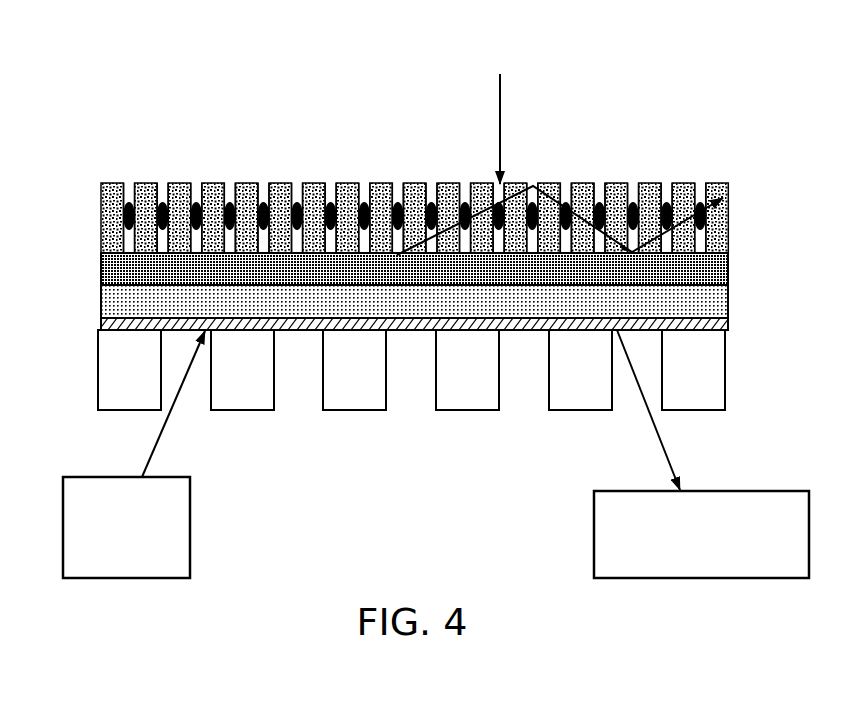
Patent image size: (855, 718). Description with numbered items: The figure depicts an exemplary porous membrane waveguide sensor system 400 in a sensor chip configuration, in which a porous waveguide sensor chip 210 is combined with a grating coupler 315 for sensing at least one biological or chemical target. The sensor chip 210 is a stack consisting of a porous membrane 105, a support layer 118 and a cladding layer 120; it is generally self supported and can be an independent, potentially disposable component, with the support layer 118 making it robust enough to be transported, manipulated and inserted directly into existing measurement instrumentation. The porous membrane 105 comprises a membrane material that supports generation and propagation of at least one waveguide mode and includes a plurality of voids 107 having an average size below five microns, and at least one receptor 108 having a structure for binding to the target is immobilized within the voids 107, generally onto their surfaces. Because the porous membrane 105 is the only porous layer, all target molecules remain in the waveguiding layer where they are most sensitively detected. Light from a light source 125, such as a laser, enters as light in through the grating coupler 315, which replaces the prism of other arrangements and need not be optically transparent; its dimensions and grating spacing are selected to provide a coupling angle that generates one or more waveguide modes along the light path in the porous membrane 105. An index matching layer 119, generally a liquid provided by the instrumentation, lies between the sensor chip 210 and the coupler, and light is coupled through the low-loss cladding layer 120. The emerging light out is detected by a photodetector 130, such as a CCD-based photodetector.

The porous membrane waveguide sensor system 400 is at (407, 354).
The porous membrane 105 is at (450, 169).
The voids 107 is at (598, 181).
The receptor 108 is at (667, 212).
The support layer 118 is at (98, 300).
The index matching layer 119 is at (732, 325).
The cladding layer 120 is at (732, 268).
The light source 125 is at (126, 527).
The photodetector 130 is at (701, 534).
The sensor chip 210 is at (406, 205).
The grating coupler 315 is at (80, 412).